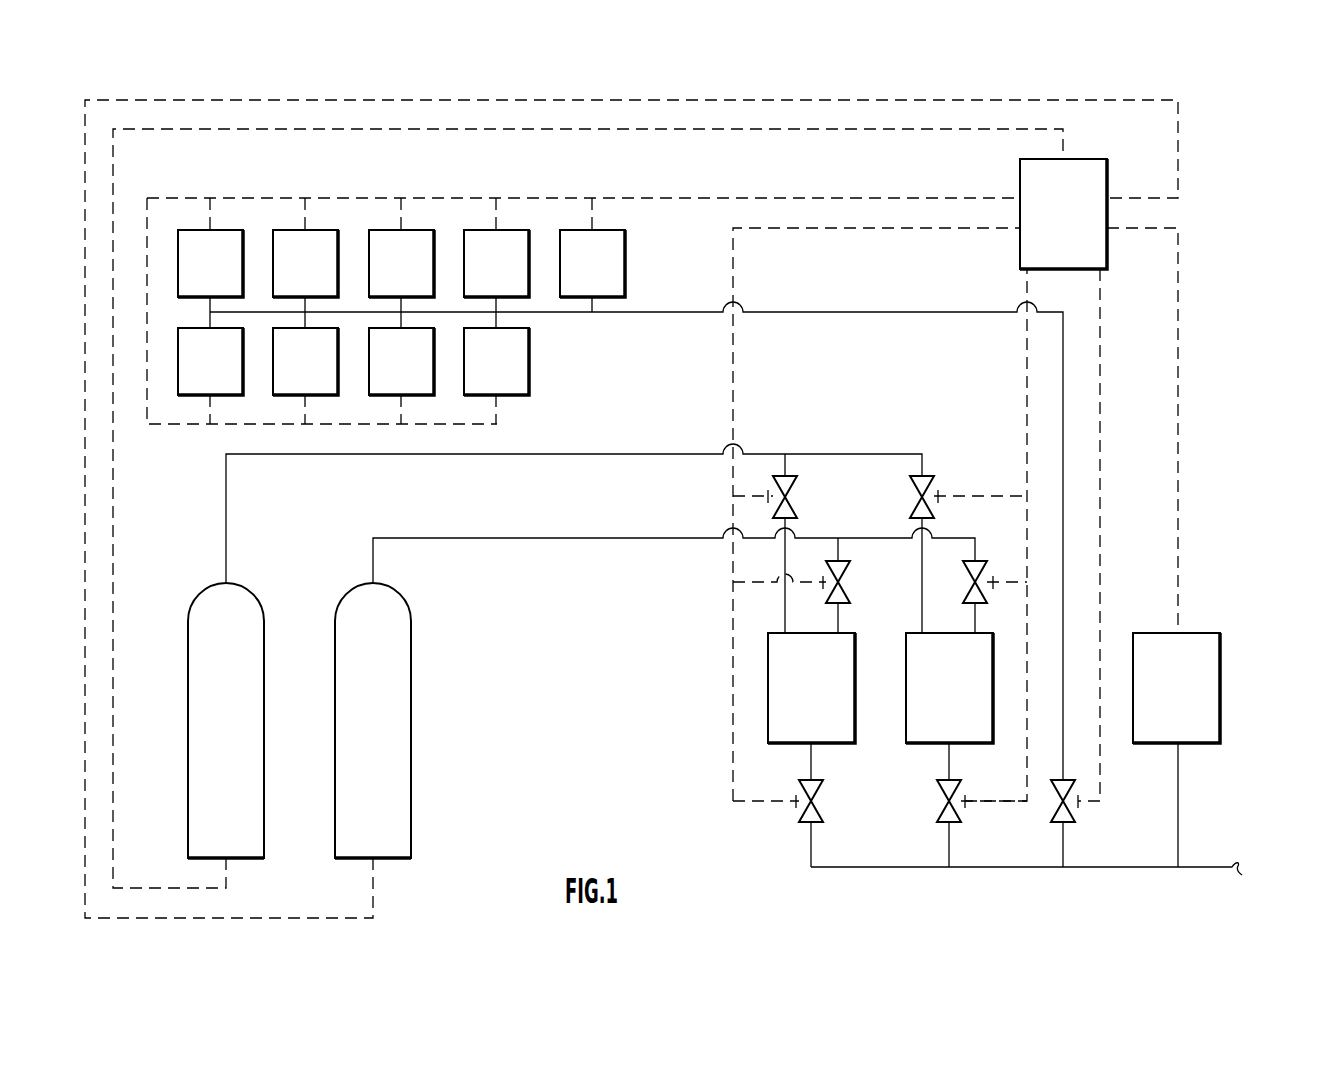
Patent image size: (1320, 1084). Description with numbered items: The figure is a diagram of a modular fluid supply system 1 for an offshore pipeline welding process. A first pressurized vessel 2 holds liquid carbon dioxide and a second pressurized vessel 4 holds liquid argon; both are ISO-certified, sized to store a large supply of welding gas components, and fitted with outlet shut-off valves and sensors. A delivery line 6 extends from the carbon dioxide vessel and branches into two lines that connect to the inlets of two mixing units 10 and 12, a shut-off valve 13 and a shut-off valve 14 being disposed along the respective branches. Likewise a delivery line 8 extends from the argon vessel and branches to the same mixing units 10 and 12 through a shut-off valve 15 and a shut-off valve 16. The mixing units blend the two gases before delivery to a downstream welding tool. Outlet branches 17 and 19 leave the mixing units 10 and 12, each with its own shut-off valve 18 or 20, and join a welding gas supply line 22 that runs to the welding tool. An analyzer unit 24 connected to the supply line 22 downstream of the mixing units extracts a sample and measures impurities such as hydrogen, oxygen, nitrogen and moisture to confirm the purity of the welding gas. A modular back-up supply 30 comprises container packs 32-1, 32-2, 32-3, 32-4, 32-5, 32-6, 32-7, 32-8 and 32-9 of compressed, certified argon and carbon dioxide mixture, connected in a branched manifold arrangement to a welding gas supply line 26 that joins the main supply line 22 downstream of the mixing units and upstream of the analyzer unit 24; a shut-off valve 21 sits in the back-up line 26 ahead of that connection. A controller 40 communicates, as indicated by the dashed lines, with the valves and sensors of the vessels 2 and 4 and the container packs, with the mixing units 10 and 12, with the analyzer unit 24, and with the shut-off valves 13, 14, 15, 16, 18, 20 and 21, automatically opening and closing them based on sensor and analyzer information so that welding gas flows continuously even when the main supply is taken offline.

The fluid supply system 1 is at (1225, 238).
The first pressurized vessel 2 is at (232, 733).
The second pressurized vessel 4 is at (379, 733).
The delivery line 6 is at (615, 454).
The delivery line 8 is at (603, 538).
The mixing unit 10 is at (802, 702).
The mixing unit 12 is at (940, 702).
The shut-off valve 13 is at (792, 502).
The shut-off valve 14 is at (933, 490).
The shut-off valve 15 is at (843, 592).
The shut-off valve 16 is at (970, 592).
The outlet branch 17 is at (812, 763).
The shut-off valve 18 is at (820, 810).
The outlet branch 19 is at (949, 762).
The shut-off valve 20 is at (940, 794).
The shut-off valve 21 is at (1055, 791).
The welding gas supply line 22 is at (1010, 868).
The analyzer unit 24 is at (1186, 702).
The welding gas supply line 26 is at (652, 313).
The back-up supply 30 is at (652, 223).
The container pack 32-1 is at (195, 276).
The container pack 32-2 is at (290, 276).
The container pack 32-3 is at (386, 276).
The container pack 32-4 is at (481, 276).
The container pack 32-5 is at (577, 276).
The container pack 32-6 is at (195, 374).
The container pack 32-7 is at (290, 374).
The container pack 32-8 is at (386, 374).
The container pack 32-9 is at (481, 374).
The controller 40 is at (1073, 226).